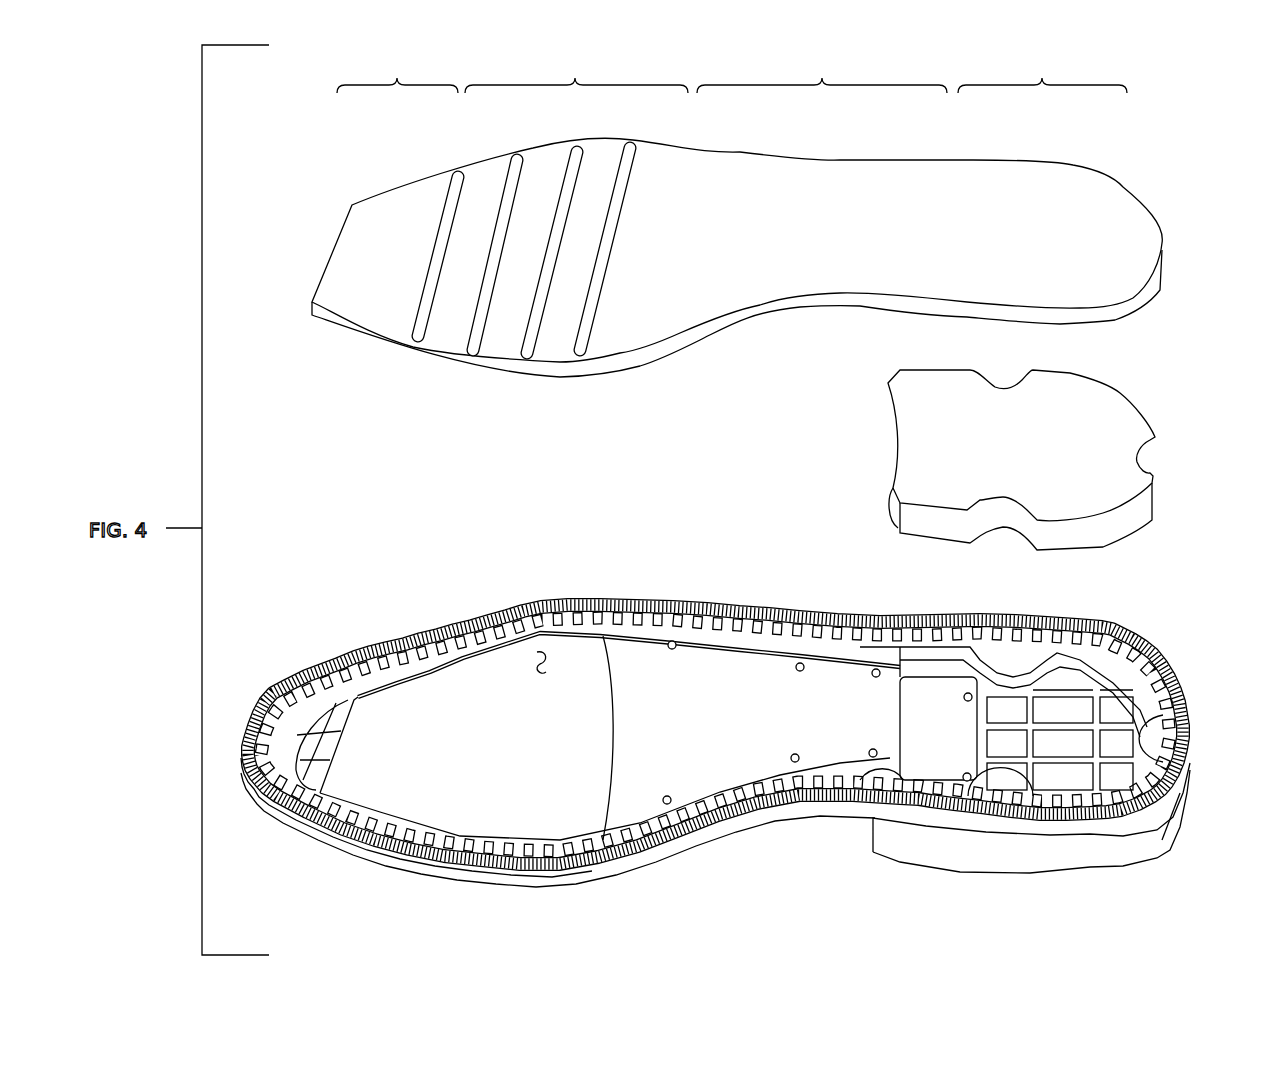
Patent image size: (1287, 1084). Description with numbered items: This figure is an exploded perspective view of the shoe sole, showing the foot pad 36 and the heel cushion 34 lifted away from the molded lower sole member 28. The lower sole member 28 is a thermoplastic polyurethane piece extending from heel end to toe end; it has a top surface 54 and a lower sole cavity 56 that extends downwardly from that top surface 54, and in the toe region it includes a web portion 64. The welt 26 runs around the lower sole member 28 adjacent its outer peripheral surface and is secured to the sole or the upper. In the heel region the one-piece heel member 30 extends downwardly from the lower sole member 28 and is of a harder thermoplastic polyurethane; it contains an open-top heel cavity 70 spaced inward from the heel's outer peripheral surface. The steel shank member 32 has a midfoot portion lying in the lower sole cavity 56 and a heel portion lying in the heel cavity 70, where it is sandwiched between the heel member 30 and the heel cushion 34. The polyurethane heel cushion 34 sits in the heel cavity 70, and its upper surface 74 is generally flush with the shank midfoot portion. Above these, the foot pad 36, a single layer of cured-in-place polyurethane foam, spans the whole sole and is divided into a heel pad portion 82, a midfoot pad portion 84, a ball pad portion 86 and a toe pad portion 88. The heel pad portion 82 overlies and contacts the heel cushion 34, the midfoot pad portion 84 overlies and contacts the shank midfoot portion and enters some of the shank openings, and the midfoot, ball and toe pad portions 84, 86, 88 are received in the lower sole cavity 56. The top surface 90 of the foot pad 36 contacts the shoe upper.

The welt 26 is at (735, 725).
The lower sole member 28 is at (1172, 797).
The heel member 30 is at (1130, 853).
The shank member 32 is at (622, 787).
The heel cushion 34 is at (1055, 460).
The foot pad 36 is at (737, 249).
The top surface 54 is at (373, 648).
The lower sole cavity 56 is at (470, 623).
The web portion 64 is at (312, 669).
The heel cavity 70 is at (1080, 727).
The upper surface 74 is at (1030, 458).
The heel pad portion 82 is at (1042, 68).
The midfoot pad portion 84 is at (822, 68).
The ball pad portion 86 is at (576, 69).
The toe pad portion 88 is at (397, 69).
The top surface 90 is at (700, 289).